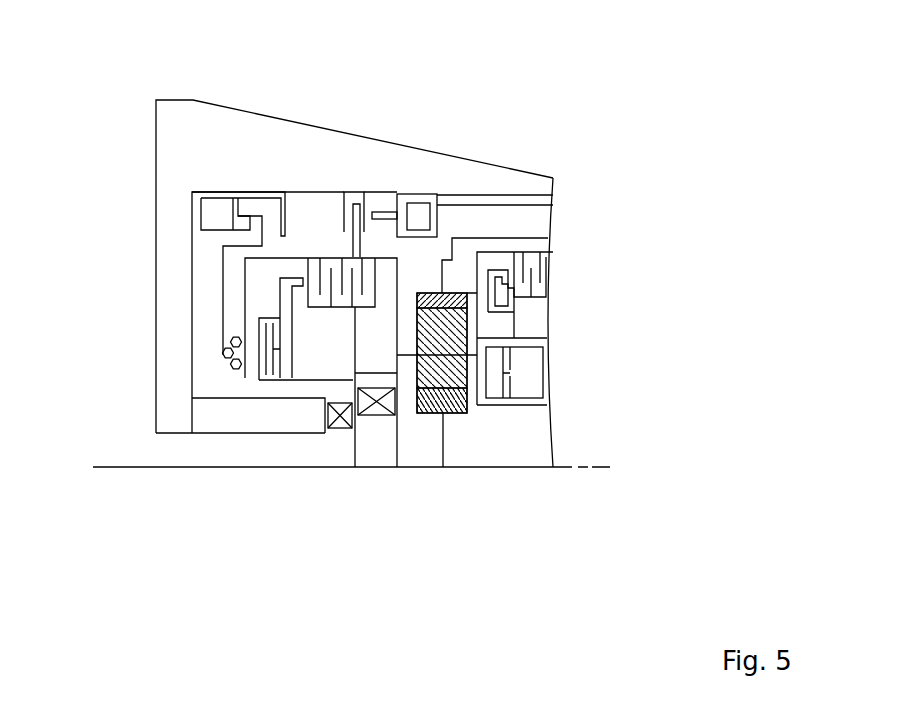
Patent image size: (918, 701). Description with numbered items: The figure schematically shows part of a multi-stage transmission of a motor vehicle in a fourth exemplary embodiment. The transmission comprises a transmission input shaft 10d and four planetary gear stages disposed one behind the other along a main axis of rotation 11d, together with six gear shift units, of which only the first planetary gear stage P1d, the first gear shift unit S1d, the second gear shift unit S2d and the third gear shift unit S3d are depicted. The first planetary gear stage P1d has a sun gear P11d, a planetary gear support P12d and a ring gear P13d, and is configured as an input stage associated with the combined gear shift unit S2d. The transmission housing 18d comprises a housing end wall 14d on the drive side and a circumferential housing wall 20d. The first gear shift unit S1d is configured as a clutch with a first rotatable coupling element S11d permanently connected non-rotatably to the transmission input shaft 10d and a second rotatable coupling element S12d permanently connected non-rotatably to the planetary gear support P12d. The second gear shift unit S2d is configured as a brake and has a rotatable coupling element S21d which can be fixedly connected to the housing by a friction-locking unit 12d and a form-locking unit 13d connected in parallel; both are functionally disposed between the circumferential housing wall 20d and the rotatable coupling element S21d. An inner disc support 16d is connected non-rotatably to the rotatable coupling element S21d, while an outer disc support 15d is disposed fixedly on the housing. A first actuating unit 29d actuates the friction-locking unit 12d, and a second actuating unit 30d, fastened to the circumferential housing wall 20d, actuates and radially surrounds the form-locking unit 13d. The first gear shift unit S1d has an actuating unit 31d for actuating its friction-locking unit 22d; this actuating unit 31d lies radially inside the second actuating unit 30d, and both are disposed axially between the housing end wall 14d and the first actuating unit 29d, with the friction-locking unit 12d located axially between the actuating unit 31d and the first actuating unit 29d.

The housing end wall 14d is at (177, 94).
The circumferential housing wall 20d is at (225, 160).
The second actuating unit 30d is at (185, 212).
The friction-locking unit 22d is at (277, 278).
The form-locking unit 13d is at (228, 366).
The actuating unit 31d is at (253, 378).
The first gear shift unit S1d is at (260, 410).
The first rotatable coupling element S11d is at (353, 342).
The inner disc support 16d is at (303, 257).
The friction-locking unit 12d is at (340, 203).
The outer disc support 15d is at (357, 195).
The transmission housing 18d is at (423, 190).
The first actuating unit 29d is at (436, 172).
The rotatable coupling element S21d is at (410, 177).
The second gear shift unit S2d is at (443, 216).
The second rotatable coupling element S12d is at (438, 252).
The third gear shift unit S3d is at (563, 283).
The ring gear P13d is at (465, 298).
The planetary gear support P12d is at (437, 357).
The sun gear P11d is at (460, 415).
The first planetary gear stage P1d is at (443, 476).
The transmission input shaft 10d is at (537, 468).
The main axis of rotation 11d is at (597, 468).